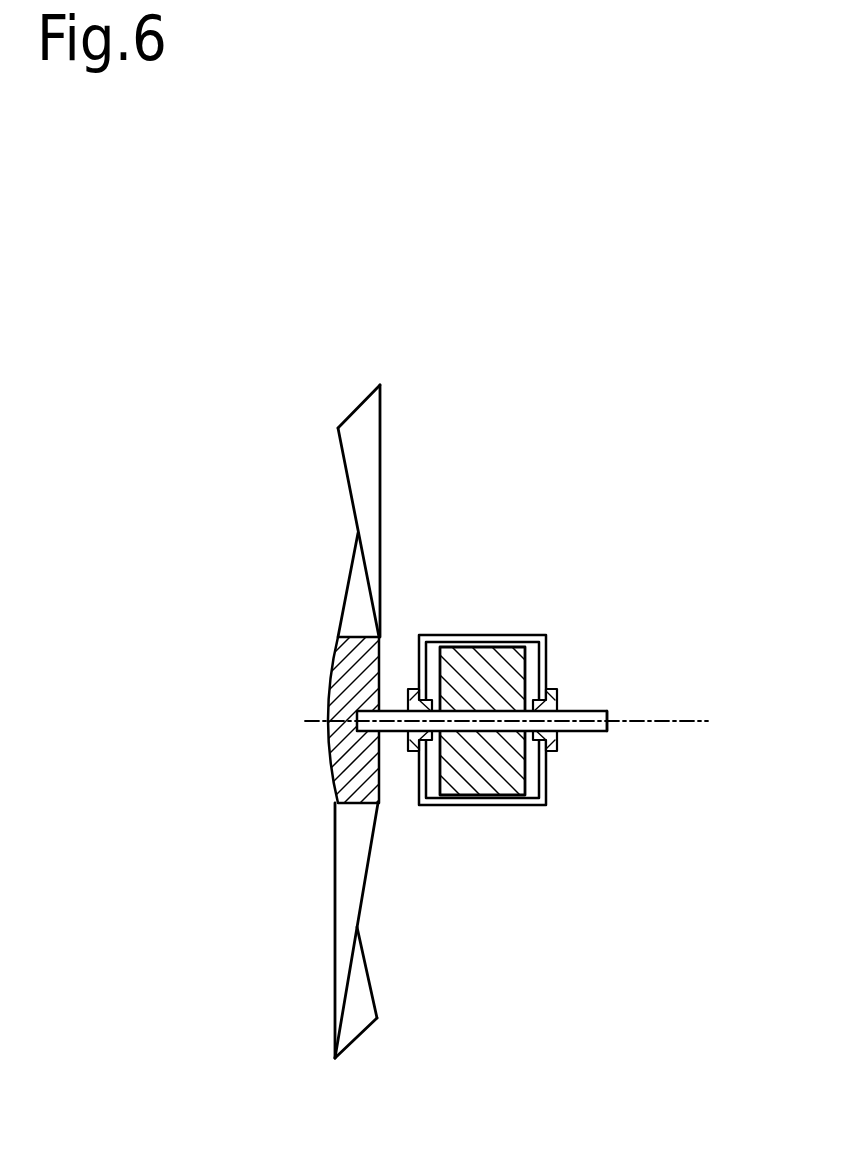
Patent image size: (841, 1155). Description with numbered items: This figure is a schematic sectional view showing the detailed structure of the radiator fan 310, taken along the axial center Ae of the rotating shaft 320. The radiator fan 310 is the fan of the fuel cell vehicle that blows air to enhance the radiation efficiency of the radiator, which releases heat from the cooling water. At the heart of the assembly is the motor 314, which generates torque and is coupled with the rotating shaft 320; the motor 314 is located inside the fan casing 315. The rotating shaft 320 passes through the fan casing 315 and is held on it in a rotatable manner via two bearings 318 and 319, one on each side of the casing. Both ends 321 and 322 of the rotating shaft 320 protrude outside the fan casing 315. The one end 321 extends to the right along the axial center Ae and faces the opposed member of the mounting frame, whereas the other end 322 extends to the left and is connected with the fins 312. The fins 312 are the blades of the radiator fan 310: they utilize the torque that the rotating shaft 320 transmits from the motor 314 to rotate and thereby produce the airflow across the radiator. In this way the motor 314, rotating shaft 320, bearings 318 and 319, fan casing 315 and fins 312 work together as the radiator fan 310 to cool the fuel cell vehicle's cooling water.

The radiator fan 310 is at (653, 326).
The fins 312 is at (350, 410).
The motor 314 is at (482, 668).
The fan casing 315 is at (527, 635).
The bearing 318 is at (410, 751).
The bearing 319 is at (555, 751).
The rotating shaft 320 is at (584, 711).
The one end 321 is at (609, 726).
The other end 322 is at (357, 726).
The axial center Ae is at (689, 720).